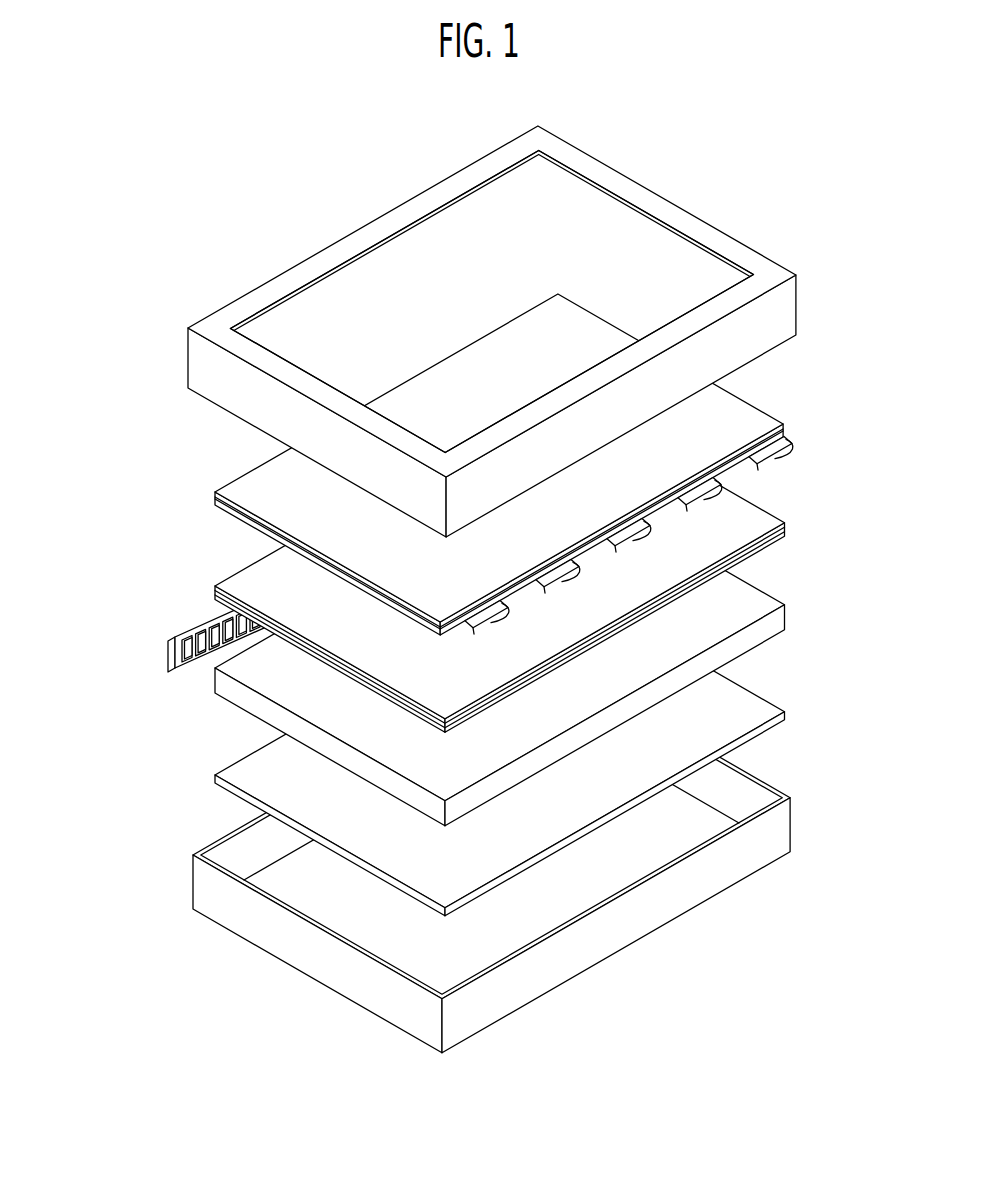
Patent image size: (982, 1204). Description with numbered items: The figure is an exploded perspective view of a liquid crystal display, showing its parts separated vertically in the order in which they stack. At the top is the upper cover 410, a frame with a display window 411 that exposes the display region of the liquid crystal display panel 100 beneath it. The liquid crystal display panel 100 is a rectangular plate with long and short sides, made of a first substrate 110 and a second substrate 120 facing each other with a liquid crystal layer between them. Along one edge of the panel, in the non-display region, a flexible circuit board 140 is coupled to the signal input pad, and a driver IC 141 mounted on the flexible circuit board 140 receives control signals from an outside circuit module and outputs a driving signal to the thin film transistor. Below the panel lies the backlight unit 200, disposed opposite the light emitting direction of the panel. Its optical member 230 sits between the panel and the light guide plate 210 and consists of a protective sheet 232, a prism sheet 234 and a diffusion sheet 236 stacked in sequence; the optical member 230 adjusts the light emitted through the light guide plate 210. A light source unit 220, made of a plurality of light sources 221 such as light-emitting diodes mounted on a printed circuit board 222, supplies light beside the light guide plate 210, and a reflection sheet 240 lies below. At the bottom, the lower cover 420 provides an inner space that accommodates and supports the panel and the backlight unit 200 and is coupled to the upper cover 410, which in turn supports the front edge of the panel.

The liquid crystal display panel 100 is at (461, 464).
The first substrate 110 is at (229, 507).
The second substrate 120 is at (215, 492).
The flexible circuit board 140 is at (663, 536).
The driver IC 141 is at (780, 458).
The backlight unit 200 is at (401, 653).
The light guide plate 210 is at (229, 690).
The light source unit 220 is at (180, 637).
The light sources 221 is at (168, 641).
The printed circuit board 222 is at (170, 660).
The optical member 230 is at (422, 561).
The protective sheet 232 is at (215, 587).
The prism sheet 234 is at (216, 591).
The diffusion sheet 236 is at (220, 596).
The reflection sheet 240 is at (247, 772).
The upper cover 410 is at (449, 331).
The display window 411 is at (425, 274).
The lower cover 420 is at (188, 880).